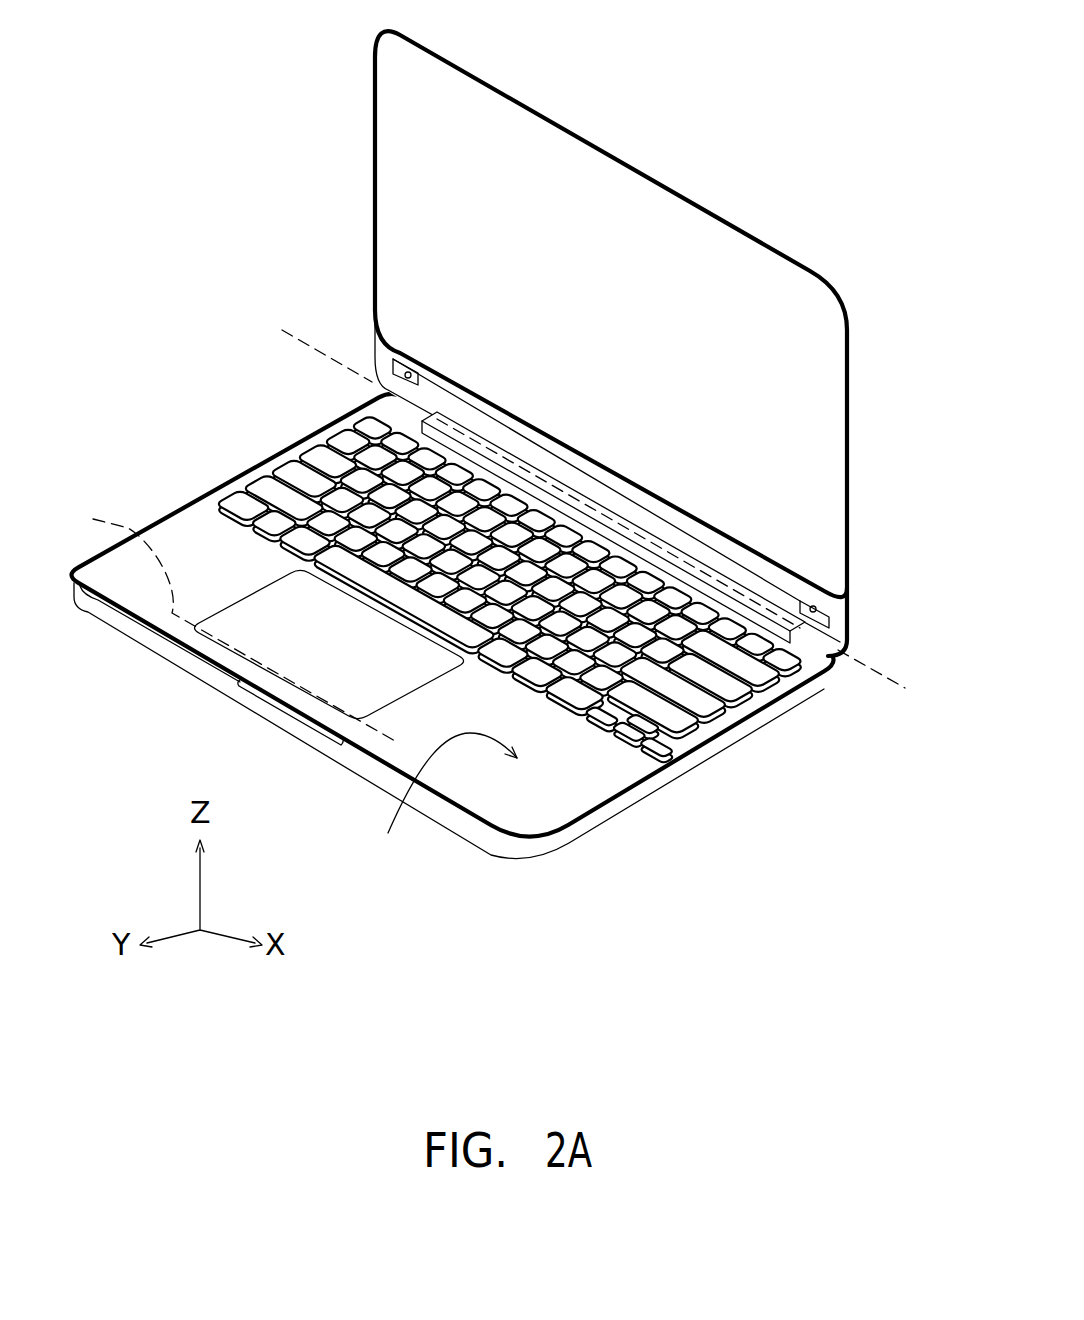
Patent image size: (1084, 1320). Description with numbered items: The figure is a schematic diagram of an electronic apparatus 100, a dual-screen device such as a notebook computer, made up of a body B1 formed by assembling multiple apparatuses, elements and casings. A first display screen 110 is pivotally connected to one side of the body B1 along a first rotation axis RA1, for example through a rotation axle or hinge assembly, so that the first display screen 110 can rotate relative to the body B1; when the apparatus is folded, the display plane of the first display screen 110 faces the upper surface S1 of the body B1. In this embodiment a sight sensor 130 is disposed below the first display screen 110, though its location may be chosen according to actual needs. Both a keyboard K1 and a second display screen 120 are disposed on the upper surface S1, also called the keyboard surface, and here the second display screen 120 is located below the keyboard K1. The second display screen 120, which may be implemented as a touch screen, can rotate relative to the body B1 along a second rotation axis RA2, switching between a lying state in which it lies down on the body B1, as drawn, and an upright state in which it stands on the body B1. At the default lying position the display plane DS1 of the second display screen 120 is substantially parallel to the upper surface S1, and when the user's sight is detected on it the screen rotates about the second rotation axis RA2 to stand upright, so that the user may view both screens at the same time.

The electronic apparatus 100 is at (502, 523).
The first display screen 110 is at (645, 343).
The second display screen 120 is at (248, 612).
The sight sensor 130 is at (830, 616).
The display plane DS1 is at (630, 263).
The first rotation axis RA1 is at (623, 525).
The second rotation axis RA2 is at (217, 620).
The upper surface S1 is at (441, 807).
The body B1 is at (437, 639).
The keyboard K1 is at (683, 688).